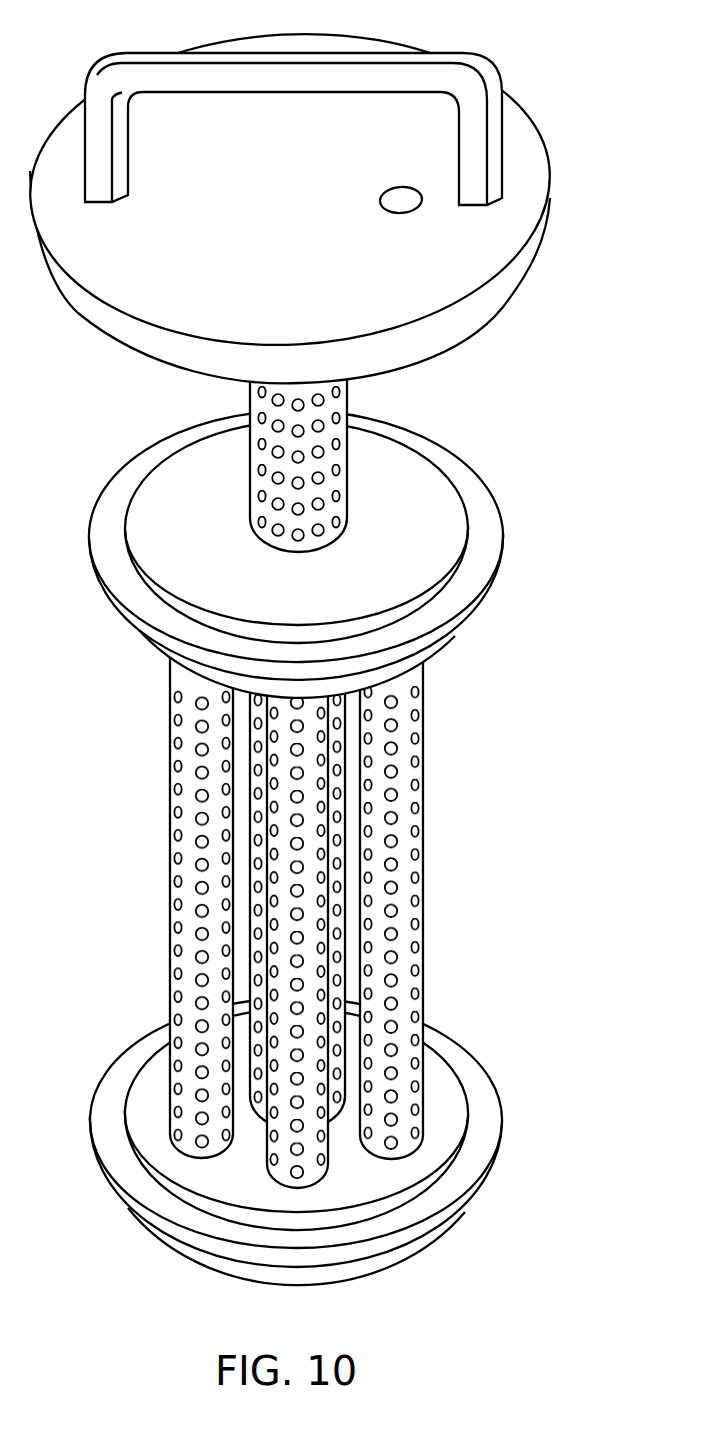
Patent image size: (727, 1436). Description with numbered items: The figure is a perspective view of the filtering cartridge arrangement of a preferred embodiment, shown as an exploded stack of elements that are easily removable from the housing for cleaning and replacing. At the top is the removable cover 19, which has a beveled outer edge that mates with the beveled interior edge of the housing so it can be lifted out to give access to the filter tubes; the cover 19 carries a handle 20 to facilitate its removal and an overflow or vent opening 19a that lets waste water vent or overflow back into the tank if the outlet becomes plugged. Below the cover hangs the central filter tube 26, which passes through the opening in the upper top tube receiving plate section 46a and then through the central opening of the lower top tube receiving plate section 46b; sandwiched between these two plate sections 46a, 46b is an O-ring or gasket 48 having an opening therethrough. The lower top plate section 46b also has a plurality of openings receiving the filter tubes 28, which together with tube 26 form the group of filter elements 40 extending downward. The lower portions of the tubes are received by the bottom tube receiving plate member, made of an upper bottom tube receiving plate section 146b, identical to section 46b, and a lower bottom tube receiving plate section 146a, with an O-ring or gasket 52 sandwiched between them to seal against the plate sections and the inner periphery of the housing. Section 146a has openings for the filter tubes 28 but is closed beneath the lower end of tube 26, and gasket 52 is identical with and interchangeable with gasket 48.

The removable cover 19 is at (513, 168).
The overflow or vent opening 19a is at (420, 210).
The handle 20 is at (350, 58).
The filter tube 26 is at (336, 433).
The upper top tube receiving plate section 46a is at (415, 487).
The O-ring or gasket 48 is at (486, 534).
The lower top tube receiving plate section 46b is at (428, 657).
The perforated tube assembly 40 is at (286, 894).
The filter tubes 28 is at (424, 843).
The upper bottom tube receiving plate section 146b is at (438, 1082).
The O-ring or gasket 52 is at (485, 1118).
The lower bottom tube receiving plate section 146a is at (377, 1267).